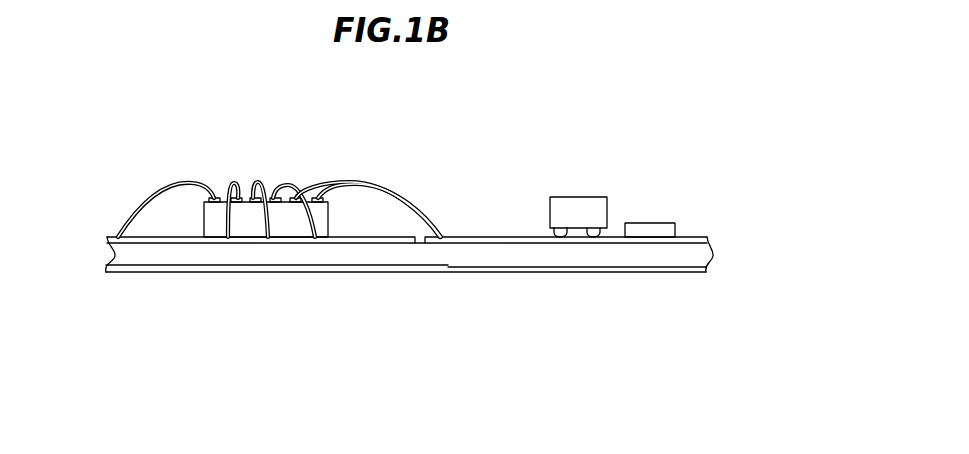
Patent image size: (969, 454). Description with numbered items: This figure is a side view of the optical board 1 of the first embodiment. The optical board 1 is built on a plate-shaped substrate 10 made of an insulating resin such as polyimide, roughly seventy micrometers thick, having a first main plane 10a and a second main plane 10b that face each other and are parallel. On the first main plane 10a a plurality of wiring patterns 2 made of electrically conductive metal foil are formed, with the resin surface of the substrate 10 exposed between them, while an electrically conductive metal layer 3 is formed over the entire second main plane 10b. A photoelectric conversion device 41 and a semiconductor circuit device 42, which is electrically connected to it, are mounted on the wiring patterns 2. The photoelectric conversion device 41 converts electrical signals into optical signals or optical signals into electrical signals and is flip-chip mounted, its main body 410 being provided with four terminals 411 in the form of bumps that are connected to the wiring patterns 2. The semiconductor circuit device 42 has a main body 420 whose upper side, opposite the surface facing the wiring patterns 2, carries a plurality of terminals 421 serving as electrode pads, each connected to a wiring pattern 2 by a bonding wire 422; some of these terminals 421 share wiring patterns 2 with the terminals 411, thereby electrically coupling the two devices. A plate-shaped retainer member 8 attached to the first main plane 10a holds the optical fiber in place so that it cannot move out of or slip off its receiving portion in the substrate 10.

The optical board 1 is at (438, 231).
The wiring patterns 2 is at (500, 239).
The metal layer 3 is at (448, 267).
The retainer member 8 is at (640, 227).
The substrate 10 is at (438, 246).
The first main plane 10a is at (688, 242).
The second main plane 10b is at (693, 268).
The photoelectric conversion device 41 is at (572, 226).
The main body 410 is at (584, 202).
The terminals (bumps) 411 is at (595, 234).
The semiconductor circuit device 42 is at (279, 218).
The main body 420 is at (255, 230).
The terminals (electrode pads) 421 is at (311, 191).
The bonding wire 422 is at (377, 184).